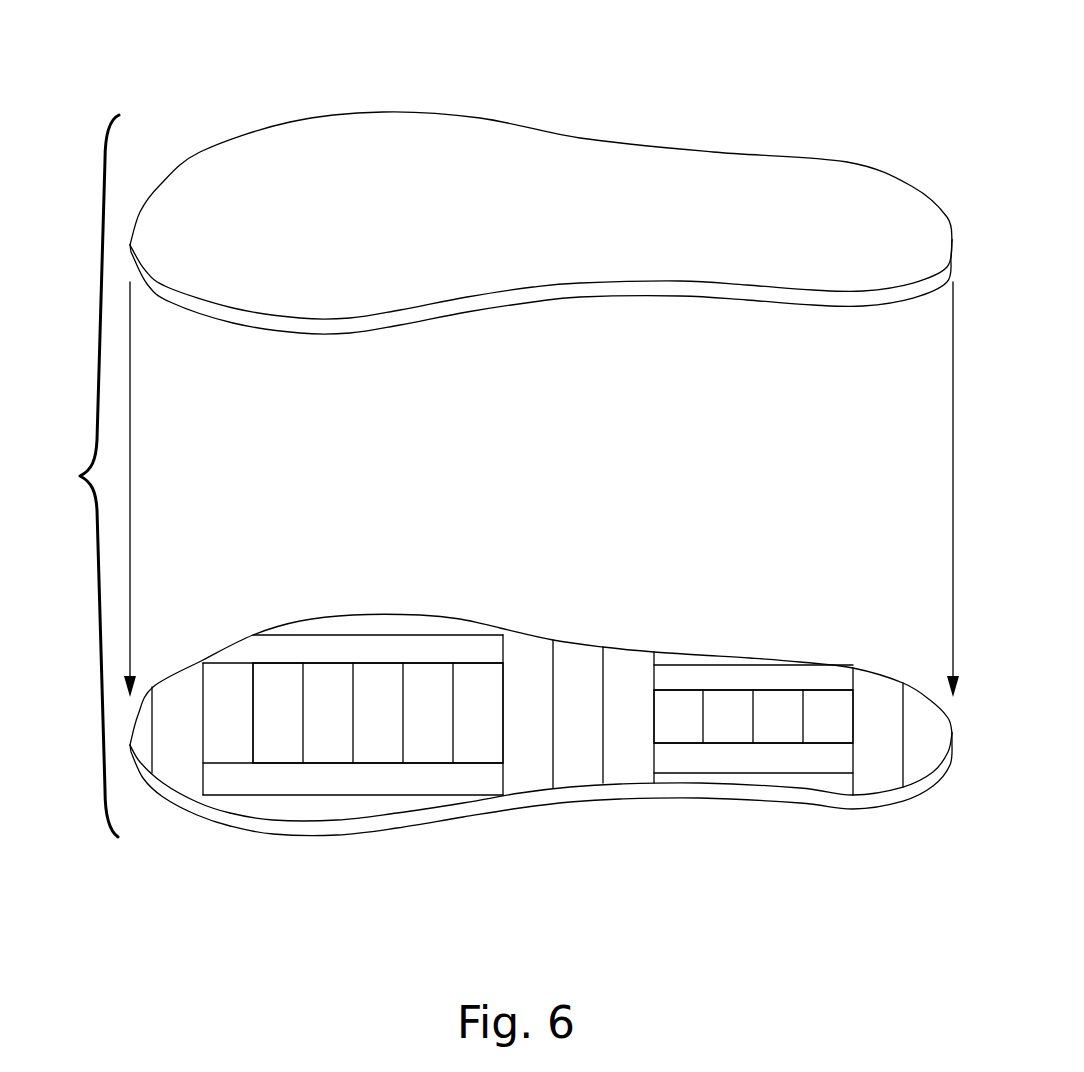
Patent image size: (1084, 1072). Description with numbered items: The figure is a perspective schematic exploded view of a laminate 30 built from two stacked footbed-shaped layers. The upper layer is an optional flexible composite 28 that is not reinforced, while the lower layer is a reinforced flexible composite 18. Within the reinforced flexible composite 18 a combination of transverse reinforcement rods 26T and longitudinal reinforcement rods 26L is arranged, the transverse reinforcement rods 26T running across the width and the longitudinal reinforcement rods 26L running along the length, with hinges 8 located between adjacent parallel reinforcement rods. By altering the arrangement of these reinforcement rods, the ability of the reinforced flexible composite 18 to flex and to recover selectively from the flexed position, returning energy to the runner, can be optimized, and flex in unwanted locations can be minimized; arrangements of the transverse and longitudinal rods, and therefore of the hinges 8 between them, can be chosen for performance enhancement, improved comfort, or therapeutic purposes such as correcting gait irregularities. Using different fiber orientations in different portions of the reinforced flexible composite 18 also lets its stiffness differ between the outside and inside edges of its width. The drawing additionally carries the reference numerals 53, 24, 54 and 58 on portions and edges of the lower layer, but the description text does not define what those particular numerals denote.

The laminate 30 is at (500, 481).
The flexible composite 28 is at (400, 180).
The reinforced flexible composite 18 is at (232, 632).
The perimeter edge of base layer 58 is at (272, 820).
The bottom layer 54 is at (337, 828).
The toe portion 53 is at (180, 685).
The longitudinal reinforcement rods 26L is at (391, 663).
The transverse reinforcement rods 26T is at (252, 733).
The arch portion 24 is at (580, 672).
The hinges 8 is at (279, 688).